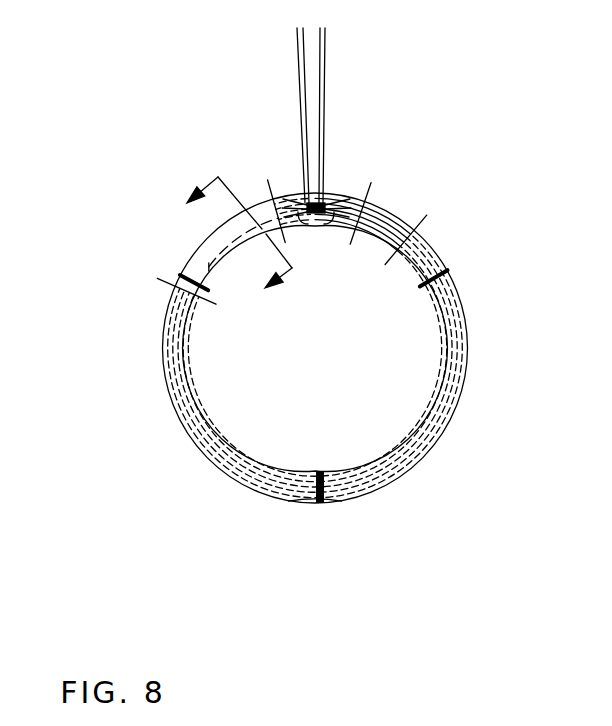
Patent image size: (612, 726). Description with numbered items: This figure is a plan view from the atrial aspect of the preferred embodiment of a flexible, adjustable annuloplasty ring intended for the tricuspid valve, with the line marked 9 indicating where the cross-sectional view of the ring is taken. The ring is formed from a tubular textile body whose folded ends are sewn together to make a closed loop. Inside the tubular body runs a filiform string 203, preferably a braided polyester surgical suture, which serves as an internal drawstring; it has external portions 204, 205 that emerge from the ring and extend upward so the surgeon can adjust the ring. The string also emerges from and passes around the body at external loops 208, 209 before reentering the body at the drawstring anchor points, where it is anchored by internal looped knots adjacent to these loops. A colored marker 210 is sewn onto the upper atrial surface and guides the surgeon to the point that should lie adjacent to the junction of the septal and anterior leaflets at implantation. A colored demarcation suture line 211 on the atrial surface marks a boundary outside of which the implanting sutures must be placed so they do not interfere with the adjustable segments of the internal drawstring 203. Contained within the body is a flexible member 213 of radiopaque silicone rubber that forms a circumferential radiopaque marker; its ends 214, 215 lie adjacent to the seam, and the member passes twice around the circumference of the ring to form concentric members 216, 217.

The cross-sectional view line 9 is at (228, 251).
The filiform string 203 is at (390, 216).
The external portion of the string 204 is at (325, 97).
The external portion of the string 205 is at (303, 134).
The external loop 208 is at (448, 272).
The external loop 209 is at (178, 275).
The colored marker 210 is at (320, 508).
The colored demarcation suture line 211 is at (190, 270).
The flexible member 213 is at (460, 387).
The end of flexible member 214 is at (274, 490).
The end of flexible member 215 is at (335, 504).
The concentric member 216 is at (191, 391).
The concentric member 217 is at (213, 452).